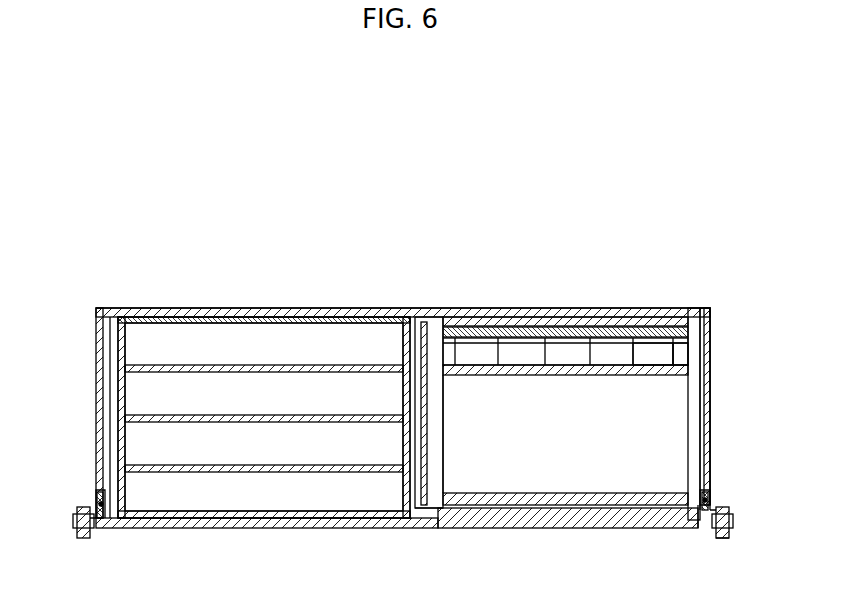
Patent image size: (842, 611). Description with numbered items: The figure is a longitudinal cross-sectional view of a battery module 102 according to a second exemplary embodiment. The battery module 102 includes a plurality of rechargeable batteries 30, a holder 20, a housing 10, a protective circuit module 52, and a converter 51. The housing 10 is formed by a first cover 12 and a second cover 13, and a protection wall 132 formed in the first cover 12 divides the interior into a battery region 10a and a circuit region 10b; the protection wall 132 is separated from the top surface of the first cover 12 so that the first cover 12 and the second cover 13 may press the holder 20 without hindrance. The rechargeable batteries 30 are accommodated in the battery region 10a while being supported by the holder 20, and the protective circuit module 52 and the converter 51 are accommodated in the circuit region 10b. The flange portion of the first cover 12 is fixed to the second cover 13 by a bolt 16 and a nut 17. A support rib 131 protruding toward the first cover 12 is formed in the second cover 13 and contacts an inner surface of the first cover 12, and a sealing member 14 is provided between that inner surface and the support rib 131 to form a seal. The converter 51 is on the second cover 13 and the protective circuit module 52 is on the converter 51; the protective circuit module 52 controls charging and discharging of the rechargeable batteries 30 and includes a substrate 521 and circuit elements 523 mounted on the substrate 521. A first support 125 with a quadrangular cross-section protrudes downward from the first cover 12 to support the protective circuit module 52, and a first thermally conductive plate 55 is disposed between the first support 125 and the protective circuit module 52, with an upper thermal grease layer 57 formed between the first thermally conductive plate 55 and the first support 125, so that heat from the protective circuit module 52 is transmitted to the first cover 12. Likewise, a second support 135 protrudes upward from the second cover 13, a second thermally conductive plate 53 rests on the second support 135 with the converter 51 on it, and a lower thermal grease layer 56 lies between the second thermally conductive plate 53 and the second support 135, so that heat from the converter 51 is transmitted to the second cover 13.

The battery module 102 is at (127, 222).
The housing 10 is at (95, 343).
The battery region 10a is at (110, 328).
The circuit region 10b is at (702, 332).
The first cover 12 is at (707, 370).
The second cover 13 is at (320, 529).
The sealing member 14 is at (103, 506).
The bolt 16 is at (728, 512).
The nut 17 is at (727, 539).
The holder 20 is at (228, 308).
The rechargeable batteries 30 is at (278, 340).
The converter 51 is at (685, 400).
The protective circuit module 52 is at (602, 256).
The substrate 521 is at (688, 355).
The circuit elements 523 is at (650, 348).
The second thermally conductive plate 53 is at (620, 506).
The first thermally conductive plate 55 is at (563, 330).
The lower thermal grease layer 56 is at (516, 513).
The upper thermal grease layer 57 is at (518, 317).
The first support 125 is at (436, 317).
The support rib 131 is at (100, 498).
The protection wall 132 is at (430, 515).
The second support 135 is at (700, 497).